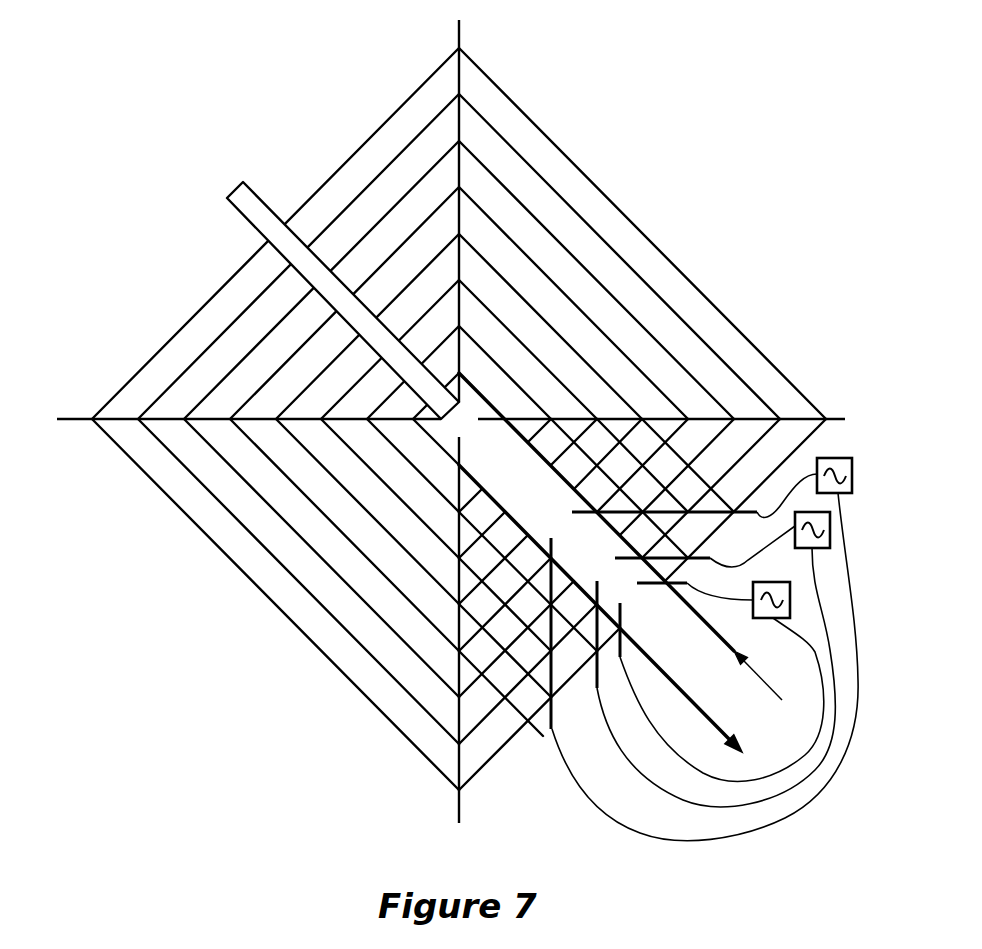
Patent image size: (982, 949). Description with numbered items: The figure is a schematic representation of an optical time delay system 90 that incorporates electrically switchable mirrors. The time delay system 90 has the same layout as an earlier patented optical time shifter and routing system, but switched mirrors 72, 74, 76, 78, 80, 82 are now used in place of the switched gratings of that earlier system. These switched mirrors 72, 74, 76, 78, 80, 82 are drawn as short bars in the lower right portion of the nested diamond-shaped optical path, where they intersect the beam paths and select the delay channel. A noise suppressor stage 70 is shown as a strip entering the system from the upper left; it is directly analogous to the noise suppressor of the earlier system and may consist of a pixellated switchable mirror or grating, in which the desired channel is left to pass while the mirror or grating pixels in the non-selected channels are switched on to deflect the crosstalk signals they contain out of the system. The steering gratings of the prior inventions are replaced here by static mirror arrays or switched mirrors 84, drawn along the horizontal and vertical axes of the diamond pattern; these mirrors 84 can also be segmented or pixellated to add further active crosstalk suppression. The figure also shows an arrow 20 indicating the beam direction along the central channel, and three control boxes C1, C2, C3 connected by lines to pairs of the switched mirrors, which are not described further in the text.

The propagation direction arrow 20 is at (769, 688).
The noise suppressor stage 70 is at (259, 196).
The switched mirror 72 is at (650, 585).
The switched mirror 74 is at (625, 558).
The switched mirror 76 is at (582, 512).
The switched mirror 78 is at (621, 618).
The switched mirror 80 is at (596, 688).
The switched mirror 82 is at (551, 730).
The static mirror arrays or switched mirrors 84 is at (461, 34).
The time delay system 90 is at (459, 419).
The signal source C1 is at (722, 681).
The signal source C2 is at (716, 659).
The signal source C3 is at (718, 649).